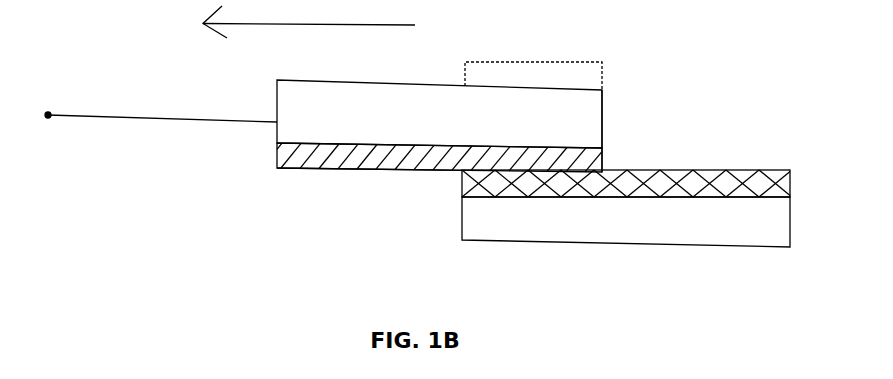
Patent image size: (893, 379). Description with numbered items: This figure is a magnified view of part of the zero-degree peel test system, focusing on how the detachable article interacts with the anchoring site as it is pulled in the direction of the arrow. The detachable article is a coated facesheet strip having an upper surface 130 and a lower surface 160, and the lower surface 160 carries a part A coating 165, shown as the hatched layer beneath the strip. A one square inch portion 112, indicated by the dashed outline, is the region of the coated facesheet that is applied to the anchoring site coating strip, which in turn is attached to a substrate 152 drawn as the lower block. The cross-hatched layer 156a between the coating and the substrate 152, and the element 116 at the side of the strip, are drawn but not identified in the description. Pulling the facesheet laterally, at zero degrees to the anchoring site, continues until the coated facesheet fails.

The upper surface 130 is at (410, 84).
The one square inch portion 112 is at (530, 62).
The side wall 116 is at (602, 137).
The part A coating 165 is at (275, 163).
The lower surface 160 is at (284, 175).
The cross-hatched layer 156a is at (460, 190).
The substrate 152 is at (482, 224).